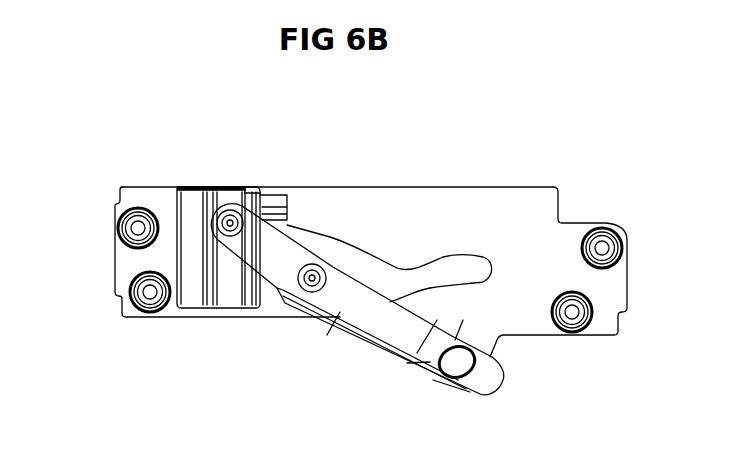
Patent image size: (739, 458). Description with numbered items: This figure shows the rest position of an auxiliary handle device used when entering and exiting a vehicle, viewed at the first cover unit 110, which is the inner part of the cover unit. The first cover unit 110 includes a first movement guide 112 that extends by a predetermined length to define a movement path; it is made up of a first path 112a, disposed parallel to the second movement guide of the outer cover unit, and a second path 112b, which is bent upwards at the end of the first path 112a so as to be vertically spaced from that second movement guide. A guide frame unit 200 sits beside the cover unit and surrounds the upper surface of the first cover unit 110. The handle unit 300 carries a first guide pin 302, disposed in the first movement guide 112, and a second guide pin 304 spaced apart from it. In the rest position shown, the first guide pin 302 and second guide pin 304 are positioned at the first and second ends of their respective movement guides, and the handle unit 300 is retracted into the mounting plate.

The first cover unit 110 is at (133, 265).
The first movement guide 112 is at (389, 205).
The first path 112a is at (343, 243).
The second path 112b is at (456, 268).
The guide frame unit 200 is at (198, 297).
The handle unit 300 is at (340, 315).
The first guide pin 302 is at (231, 223).
The second guide pin 304 is at (312, 278).